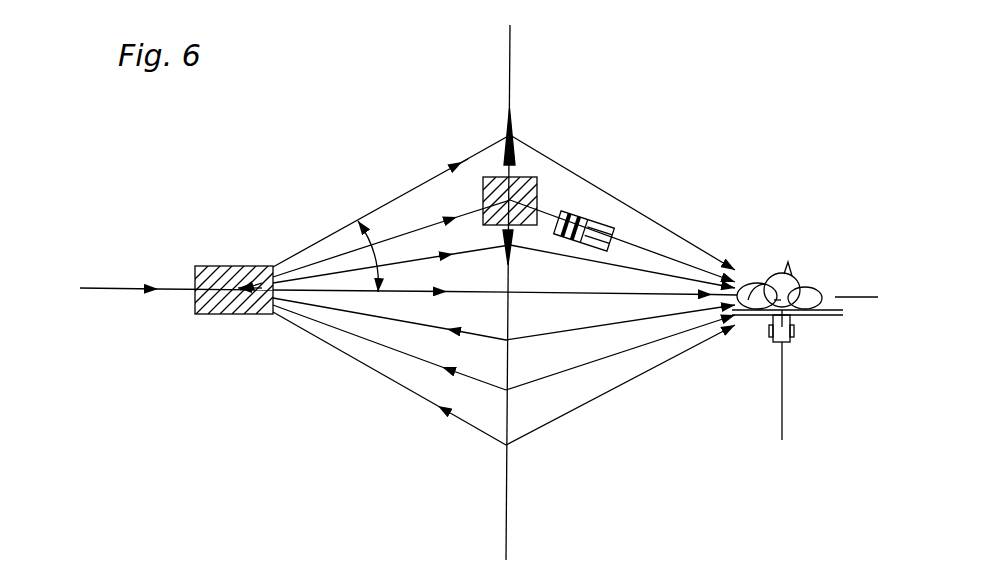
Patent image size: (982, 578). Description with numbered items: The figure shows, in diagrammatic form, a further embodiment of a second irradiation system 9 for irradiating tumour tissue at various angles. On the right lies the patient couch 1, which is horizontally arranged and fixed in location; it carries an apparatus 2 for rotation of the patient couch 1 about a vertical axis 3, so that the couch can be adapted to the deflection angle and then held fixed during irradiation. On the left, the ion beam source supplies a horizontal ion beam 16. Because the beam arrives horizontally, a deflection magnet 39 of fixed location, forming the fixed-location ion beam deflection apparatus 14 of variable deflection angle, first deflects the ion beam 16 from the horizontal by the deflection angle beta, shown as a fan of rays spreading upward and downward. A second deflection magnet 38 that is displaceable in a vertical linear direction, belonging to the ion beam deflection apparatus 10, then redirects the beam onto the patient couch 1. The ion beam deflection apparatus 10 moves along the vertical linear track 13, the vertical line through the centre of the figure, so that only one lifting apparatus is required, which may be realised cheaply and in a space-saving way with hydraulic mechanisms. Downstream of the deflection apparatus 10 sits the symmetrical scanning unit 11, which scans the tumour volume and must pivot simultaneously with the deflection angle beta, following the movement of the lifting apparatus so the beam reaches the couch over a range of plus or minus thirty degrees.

The patient couch 1 is at (843, 313).
The apparatus for rotation 2 is at (793, 338).
The vertical axis 3 is at (782, 410).
The second irradiation system 9 is at (582, 106).
The ion beam deflection apparatus 10 is at (523, 167).
The symmetrical scanning unit 11 is at (557, 175).
The vertical linear track 13 is at (515, 497).
The ion beam deflection apparatus of fixed location 14 is at (232, 251).
The horizontal ion beam 16 is at (118, 288).
The deflection magnet 38 is at (487, 176).
The deflection magnet 39 is at (210, 266).